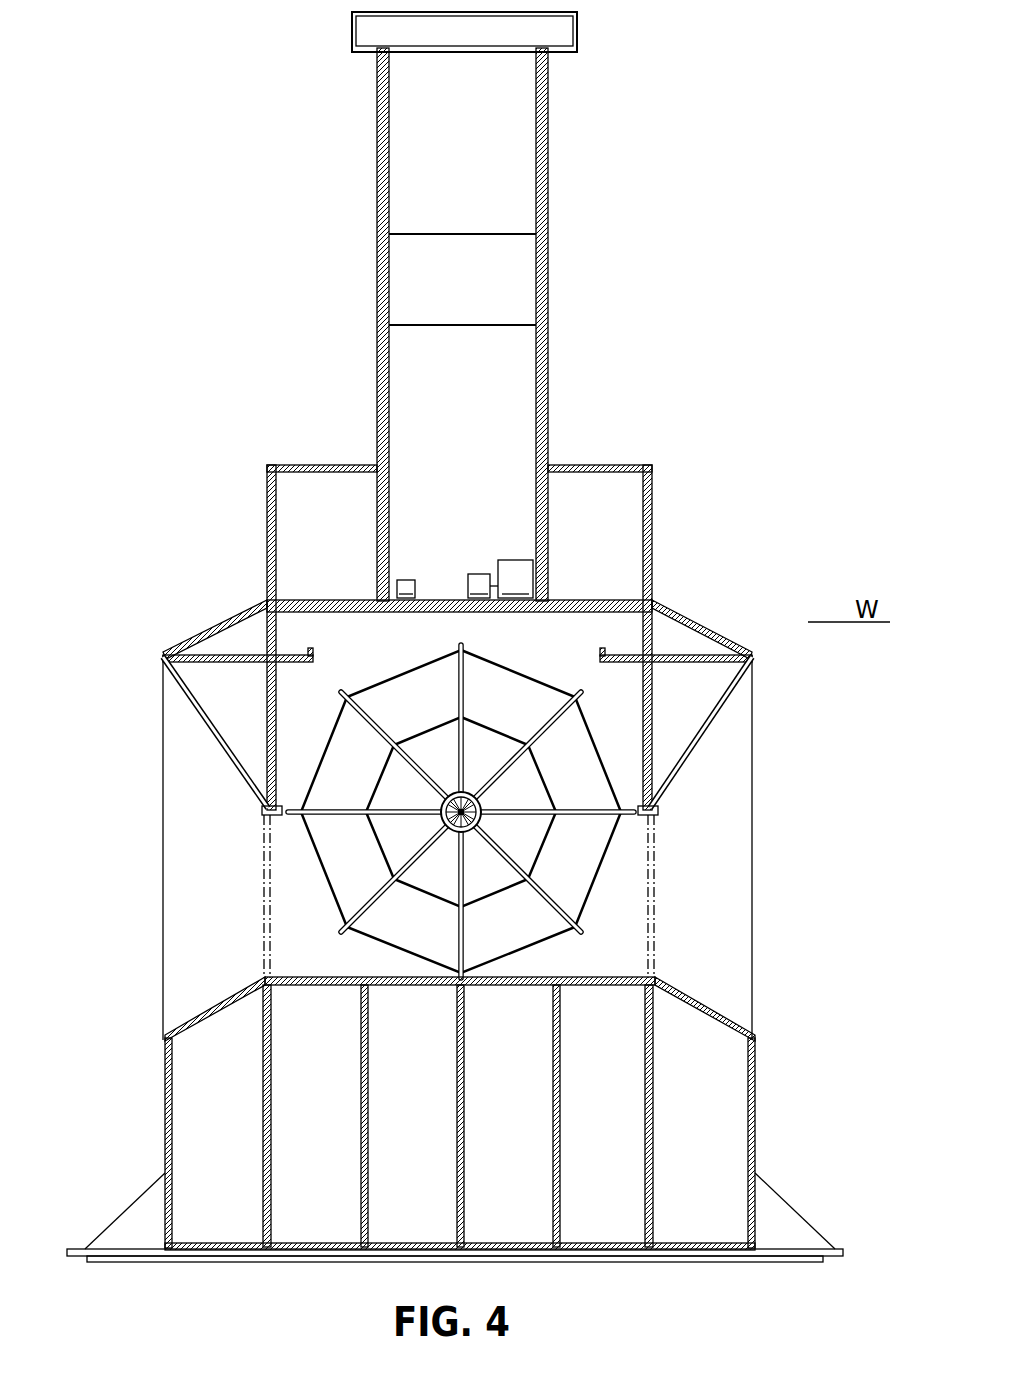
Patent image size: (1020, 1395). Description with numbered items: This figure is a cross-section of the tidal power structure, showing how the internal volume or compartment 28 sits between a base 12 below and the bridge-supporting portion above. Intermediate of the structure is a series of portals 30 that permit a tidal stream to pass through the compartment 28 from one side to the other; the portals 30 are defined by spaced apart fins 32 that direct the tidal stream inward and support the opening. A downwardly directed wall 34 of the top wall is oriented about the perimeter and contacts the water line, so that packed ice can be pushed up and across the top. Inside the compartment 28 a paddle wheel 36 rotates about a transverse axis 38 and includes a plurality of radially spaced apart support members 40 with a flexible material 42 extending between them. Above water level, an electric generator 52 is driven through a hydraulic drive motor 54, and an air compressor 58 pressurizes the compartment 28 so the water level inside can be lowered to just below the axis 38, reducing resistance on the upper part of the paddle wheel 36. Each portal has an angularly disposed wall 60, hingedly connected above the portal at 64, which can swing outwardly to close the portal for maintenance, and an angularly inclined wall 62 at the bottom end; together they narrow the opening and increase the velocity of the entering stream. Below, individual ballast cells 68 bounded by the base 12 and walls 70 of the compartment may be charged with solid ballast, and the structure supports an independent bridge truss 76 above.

The base 12 is at (800, 1218).
The compartment 28 is at (607, 625).
The portals 30 is at (262, 930).
The fins 32 is at (722, 910).
The downwardly directed wall 34 is at (240, 638).
The paddle wheel 36 is at (320, 872).
The axis 38 is at (468, 795).
The support members 40 is at (475, 712).
The flexible material 42 is at (430, 728).
The electric generator 52 is at (517, 568).
The hydraulic drive motor 54 is at (480, 575).
The air compressor 58 is at (403, 582).
The angularly disposed wall 60 is at (742, 695).
The angularly inclined wall 62 is at (700, 1000).
The hinge 64 is at (660, 808).
The ballast cells 68 is at (227, 1135).
The walls 70 is at (508, 985).
The bridge truss 76 is at (548, 134).